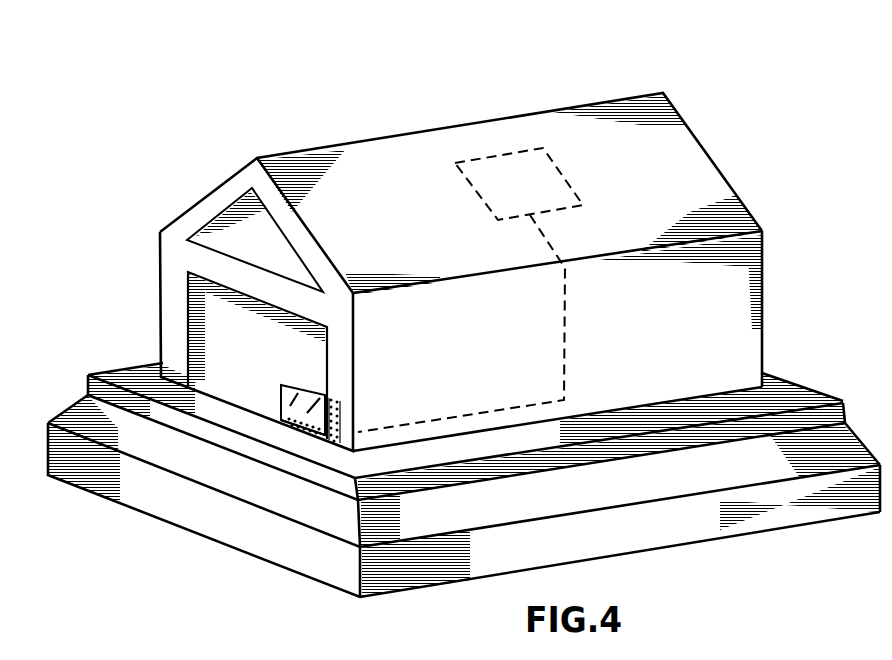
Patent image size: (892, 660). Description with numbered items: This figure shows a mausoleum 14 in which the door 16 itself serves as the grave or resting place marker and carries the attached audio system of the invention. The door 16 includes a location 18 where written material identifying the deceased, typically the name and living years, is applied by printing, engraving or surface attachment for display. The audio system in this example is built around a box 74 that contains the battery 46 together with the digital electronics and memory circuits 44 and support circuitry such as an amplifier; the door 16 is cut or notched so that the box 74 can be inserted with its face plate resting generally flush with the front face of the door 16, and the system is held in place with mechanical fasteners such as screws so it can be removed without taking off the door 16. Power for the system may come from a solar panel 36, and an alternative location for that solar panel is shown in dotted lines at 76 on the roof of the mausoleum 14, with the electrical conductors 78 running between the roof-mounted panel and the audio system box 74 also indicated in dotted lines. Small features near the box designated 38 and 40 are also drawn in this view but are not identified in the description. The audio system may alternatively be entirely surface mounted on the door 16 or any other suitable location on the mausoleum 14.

The mausoleum 14 is at (380, 153).
The mausoleum door 16 is at (238, 300).
The location for written information 18 is at (205, 322).
The solar panel 36 is at (328, 390).
The speaker grille 38 is at (316, 428).
The base plate 40 is at (281, 420).
The digital electronics and memory circuits 44 is at (322, 436).
The battery 46 is at (330, 437).
The box 74 is at (343, 445).
The alternative solar panel location 76 is at (523, 175).
The electrical conductors 78 is at (552, 243).